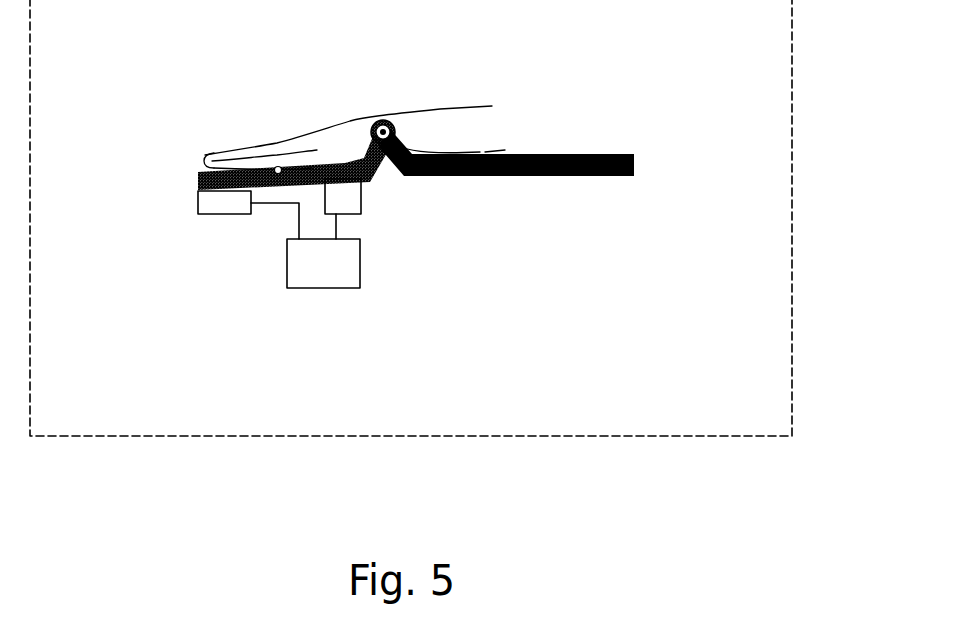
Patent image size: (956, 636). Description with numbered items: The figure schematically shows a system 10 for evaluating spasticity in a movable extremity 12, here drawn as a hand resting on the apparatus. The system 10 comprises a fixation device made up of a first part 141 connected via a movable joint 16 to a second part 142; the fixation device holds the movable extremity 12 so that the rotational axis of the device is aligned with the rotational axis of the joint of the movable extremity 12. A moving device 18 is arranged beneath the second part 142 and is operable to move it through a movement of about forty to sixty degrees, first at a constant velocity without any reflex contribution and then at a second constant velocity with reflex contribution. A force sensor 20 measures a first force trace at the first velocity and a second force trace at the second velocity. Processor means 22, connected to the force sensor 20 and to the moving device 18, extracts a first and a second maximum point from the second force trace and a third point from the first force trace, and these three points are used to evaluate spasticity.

The system 10 is at (792, 145).
The movable extremity 12 is at (252, 143).
The first part 141 is at (568, 178).
The second part 142 is at (200, 179).
The movable joint 16 is at (376, 118).
The moving device 18 is at (210, 214).
The force sensor 20 is at (361, 195).
The processor means 22 is at (360, 270).